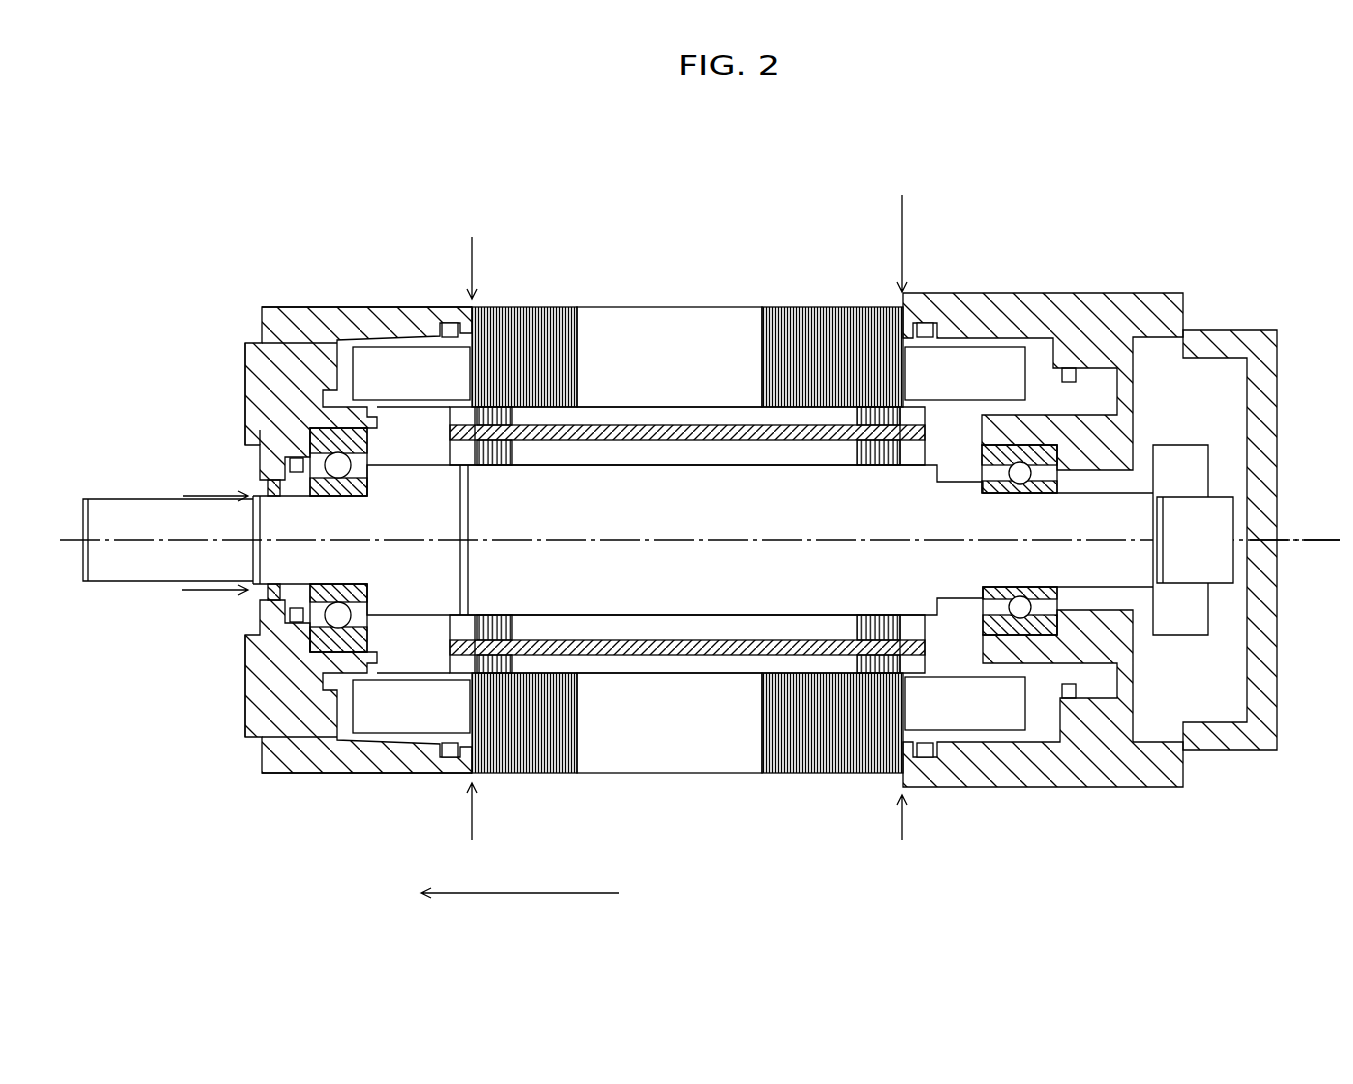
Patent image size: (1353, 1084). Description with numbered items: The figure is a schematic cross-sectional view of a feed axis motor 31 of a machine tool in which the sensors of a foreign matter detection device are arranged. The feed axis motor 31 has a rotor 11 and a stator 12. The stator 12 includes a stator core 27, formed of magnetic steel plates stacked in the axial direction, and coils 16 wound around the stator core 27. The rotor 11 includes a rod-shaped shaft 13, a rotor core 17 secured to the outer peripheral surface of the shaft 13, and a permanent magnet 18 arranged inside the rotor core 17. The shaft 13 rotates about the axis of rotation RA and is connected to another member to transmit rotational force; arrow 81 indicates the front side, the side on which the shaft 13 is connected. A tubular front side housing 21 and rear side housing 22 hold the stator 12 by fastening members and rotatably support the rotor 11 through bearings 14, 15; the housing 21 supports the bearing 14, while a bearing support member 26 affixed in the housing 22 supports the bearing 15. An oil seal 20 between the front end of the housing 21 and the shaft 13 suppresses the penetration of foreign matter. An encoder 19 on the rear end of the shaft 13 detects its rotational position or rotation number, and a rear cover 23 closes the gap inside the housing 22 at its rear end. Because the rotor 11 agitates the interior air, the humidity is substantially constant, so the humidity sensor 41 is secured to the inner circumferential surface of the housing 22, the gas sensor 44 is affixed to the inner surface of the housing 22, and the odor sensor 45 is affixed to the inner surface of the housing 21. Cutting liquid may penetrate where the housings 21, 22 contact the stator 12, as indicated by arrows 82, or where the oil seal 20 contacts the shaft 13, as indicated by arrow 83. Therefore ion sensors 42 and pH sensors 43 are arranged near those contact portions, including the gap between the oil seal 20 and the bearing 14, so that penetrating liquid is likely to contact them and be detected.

The rotor 11 is at (558, 453).
The stator 12 is at (834, 303).
The shaft 13 is at (728, 592).
The bearing 14 is at (268, 742).
The bearing 15 is at (1025, 627).
The coil 16 is at (371, 362).
The rotor core 17 is at (742, 417).
The magnet 18 is at (653, 433).
The encoder 19 is at (1192, 612).
The oil seal 20 is at (263, 487).
The front side housing 21 is at (383, 318).
The rear side housing 22 is at (1000, 306).
The rear cover 23 is at (1215, 340).
The bearing support member 26 is at (1103, 653).
The stator core 27 is at (688, 333).
The feed axis motor 31 is at (1052, 185).
The humidity sensor 41 is at (1068, 368).
The ion sensor 42 is at (450, 323).
The pH sensor 43 is at (450, 760).
The gas sensor 44 is at (1070, 698).
The odor sensor 45 is at (262, 372).
The arrow 81 is at (551, 896).
The arrow 82 is at (472, 262).
The arrow 83 is at (200, 494).
The axis of rotation RA is at (1322, 533).